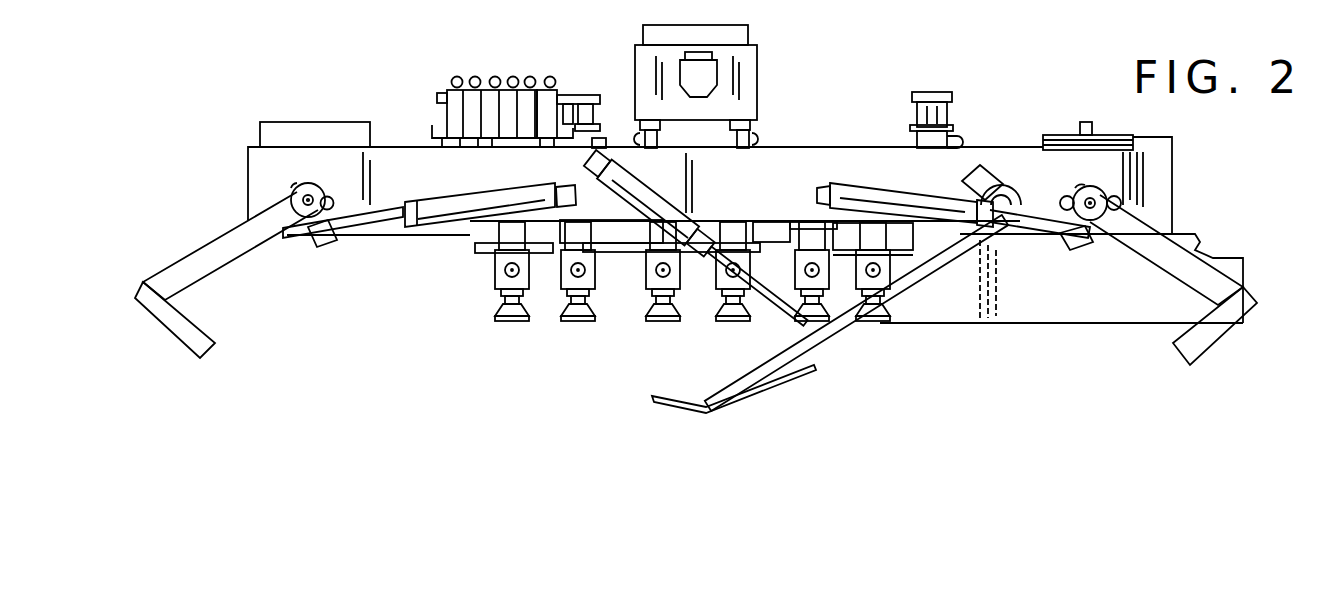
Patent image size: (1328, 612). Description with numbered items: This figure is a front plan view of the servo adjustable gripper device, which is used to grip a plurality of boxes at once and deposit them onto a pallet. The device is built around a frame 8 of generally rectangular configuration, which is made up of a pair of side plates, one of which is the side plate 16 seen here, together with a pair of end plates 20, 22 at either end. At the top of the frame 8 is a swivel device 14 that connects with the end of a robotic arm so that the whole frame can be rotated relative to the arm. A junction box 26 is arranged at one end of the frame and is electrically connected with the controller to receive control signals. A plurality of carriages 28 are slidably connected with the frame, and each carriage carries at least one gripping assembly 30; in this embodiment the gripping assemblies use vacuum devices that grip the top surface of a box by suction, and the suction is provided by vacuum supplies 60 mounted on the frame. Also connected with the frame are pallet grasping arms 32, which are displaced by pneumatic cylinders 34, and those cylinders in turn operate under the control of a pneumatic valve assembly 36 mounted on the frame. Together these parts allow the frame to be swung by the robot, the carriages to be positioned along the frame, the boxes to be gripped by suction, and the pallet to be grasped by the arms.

The frame 8 is at (1005, 163).
The swivel device 14 is at (748, 65).
The side plate 16 is at (386, 168).
The end plate 20 is at (270, 192).
The end plate 22 is at (1153, 175).
The junction box 26 is at (316, 147).
The carriage 28 is at (490, 228).
The gripping assembly 30 is at (578, 325).
The pallet grasping arm 32 is at (218, 250).
The pneumatic cylinder 34 is at (470, 208).
The pneumatic valve assembly 36 is at (490, 80).
The vacuum supply 60 is at (915, 120).